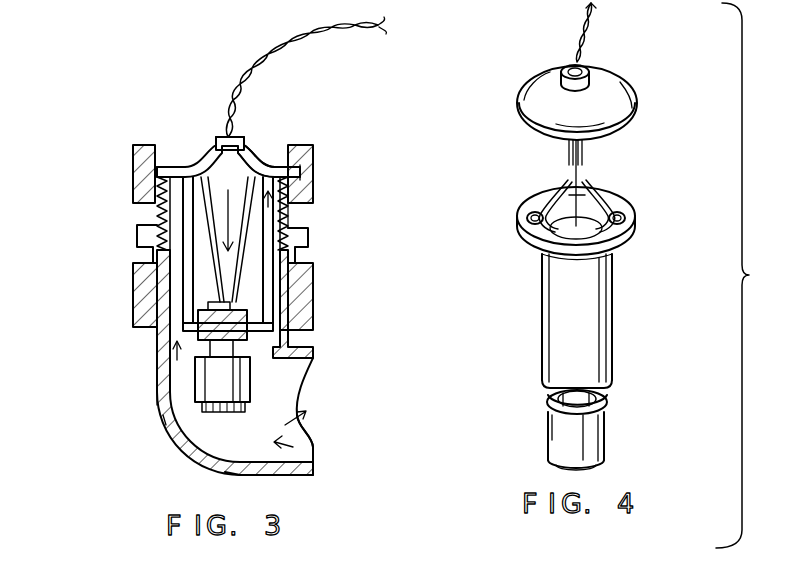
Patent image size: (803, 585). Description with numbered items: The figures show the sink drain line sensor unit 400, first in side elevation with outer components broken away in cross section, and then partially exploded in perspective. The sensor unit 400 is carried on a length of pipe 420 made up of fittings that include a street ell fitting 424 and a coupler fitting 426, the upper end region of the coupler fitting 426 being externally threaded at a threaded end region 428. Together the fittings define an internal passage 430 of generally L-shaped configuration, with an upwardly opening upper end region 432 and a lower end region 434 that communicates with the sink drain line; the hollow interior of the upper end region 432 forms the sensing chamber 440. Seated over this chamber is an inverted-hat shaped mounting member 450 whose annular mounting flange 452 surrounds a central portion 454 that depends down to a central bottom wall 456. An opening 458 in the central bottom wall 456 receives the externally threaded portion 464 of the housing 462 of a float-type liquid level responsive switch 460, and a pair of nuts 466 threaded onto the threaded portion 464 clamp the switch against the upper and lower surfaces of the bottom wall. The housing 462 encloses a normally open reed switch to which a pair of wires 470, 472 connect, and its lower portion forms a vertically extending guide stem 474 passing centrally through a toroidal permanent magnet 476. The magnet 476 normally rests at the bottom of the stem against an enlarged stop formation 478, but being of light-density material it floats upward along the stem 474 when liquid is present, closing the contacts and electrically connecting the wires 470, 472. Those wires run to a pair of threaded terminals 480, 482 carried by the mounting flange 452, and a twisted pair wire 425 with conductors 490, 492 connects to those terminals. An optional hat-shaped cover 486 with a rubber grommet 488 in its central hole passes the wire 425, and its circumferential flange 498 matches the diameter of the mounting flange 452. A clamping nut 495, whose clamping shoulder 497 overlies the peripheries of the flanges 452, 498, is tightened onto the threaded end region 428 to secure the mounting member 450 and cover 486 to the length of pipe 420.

In FIG. 3, the sensor unit 400 is at (130, 97).
In FIG. 3, the length of pipe 420 is at (170, 462).
In FIG. 3, the street ell fitting 424 is at (255, 475).
In FIG. 3, the wire 425 is at (392, 30).
In FIG. 4, the wire 425 is at (606, 10).
In FIG. 3, the coupler fitting 426 is at (312, 237).
In FIG. 3, the threaded end region 428 is at (292, 204).
In FIG. 3, the internal passage 430 is at (313, 450).
In FIG. 3, the upper end region 432 is at (308, 195).
In FIG. 3, the lower end region 434 is at (225, 474).
In FIG. 3, the sensing chamber 440 is at (162, 372).
In FIG. 3, the mounting member 450 is at (276, 258).
In FIG. 4, the mounting member 450 is at (622, 307).
In FIG. 3, the mounting flange 452 is at (163, 205).
In FIG. 4, the mounting flange 452 is at (612, 200).
In FIG. 3, the central portion 454 is at (133, 290).
In FIG. 4, the central portion 454 is at (616, 345).
In FIG. 3, the central bottom wall 456 is at (308, 315).
In FIG. 4, the central bottom wall 456 is at (609, 386).
In FIG. 3, the opening 458 is at (158, 415).
In FIG. 3, the float-type liquid level responsive switch 460 is at (252, 143).
In FIG. 4, the float-type liquid level responsive switch 460 is at (542, 426).
In FIG. 3, the housing 462 is at (300, 342).
In FIG. 3, the externally threaded portion 464 is at (262, 290).
In FIG. 3, the nuts 466 is at (160, 325).
In FIG. 3, the wire 470 is at (156, 228).
In FIG. 4, the wire 470 is at (546, 243).
In FIG. 3, the wire 472 is at (286, 222).
In FIG. 4, the wire 472 is at (607, 232).
In FIG. 3, the guide stem 474 is at (258, 352).
In FIG. 4, the guide stem 474 is at (550, 400).
In FIG. 3, the permanent magnet 476 is at (240, 392).
In FIG. 4, the permanent magnet 476 is at (600, 440).
In FIG. 3, the stop formation 478 is at (168, 435).
In FIG. 4, the stop formation 478 is at (588, 469).
In FIG. 3, the threaded terminal 480 is at (180, 160).
In FIG. 4, the threaded terminal 480 is at (530, 212).
In FIG. 3, the threaded terminal 482 is at (290, 146).
In FIG. 4, the threaded terminal 482 is at (625, 218).
In FIG. 3, the cover 486 is at (265, 134).
In FIG. 4, the cover 486 is at (624, 82).
In FIG. 3, the rubber grommet 488 is at (240, 137).
In FIG. 4, the rubber grommet 488 is at (593, 70).
In FIG. 4, the conductor 490 is at (565, 183).
In FIG. 4, the conductor 492 is at (597, 186).
In FIG. 3, the clamping nut 495 is at (132, 166).
In FIG. 3, the clamping shoulder 497 is at (190, 150).
In FIG. 3, the flange 498 is at (306, 165).
In FIG. 4, the flange 498 is at (636, 120).